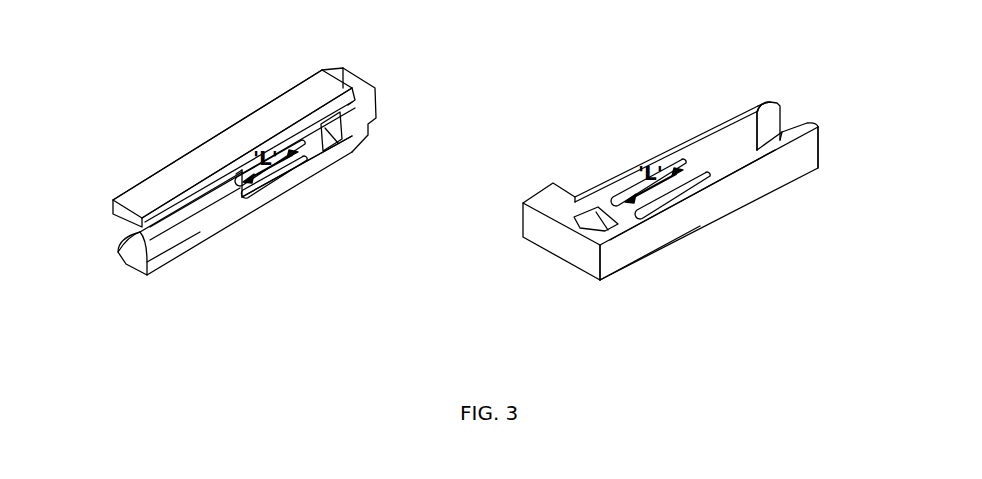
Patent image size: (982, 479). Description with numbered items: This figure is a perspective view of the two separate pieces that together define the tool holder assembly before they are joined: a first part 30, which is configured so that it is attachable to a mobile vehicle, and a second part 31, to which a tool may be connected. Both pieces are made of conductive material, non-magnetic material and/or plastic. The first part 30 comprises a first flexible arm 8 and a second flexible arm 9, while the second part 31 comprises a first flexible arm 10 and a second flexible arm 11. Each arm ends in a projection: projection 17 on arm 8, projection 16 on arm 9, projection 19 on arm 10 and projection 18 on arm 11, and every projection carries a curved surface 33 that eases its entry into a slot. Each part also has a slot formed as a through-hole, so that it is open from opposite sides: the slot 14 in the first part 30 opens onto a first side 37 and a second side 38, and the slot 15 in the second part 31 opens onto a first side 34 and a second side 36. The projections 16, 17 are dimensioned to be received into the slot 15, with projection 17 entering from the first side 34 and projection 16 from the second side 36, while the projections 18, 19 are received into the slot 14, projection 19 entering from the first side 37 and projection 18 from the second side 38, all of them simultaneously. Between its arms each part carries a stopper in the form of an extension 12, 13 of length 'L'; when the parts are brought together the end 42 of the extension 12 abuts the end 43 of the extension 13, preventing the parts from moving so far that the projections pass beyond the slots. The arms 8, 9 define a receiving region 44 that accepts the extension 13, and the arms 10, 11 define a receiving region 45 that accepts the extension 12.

The first flexible arm 8 is at (162, 185).
The first part 30 is at (281, 95).
The first side 37 is at (222, 133).
The projection 17 is at (130, 213).
The curved surface 33 is at (135, 240).
The projection 16 is at (138, 252).
The second flexible arm 9 is at (180, 226).
The receiving region 44 is at (192, 212).
The end 42 is at (233, 182).
The extension 12 is at (262, 178).
The second side 38 is at (313, 155).
The slot 14 is at (327, 122).
The first flexible arm 10 is at (723, 123).
The projection 19 is at (770, 108).
The projection 18 is at (793, 137).
The second flexible arm 11 is at (783, 163).
The receiving region 45 is at (735, 155).
The end 43 is at (697, 173).
The extension 13 is at (667, 188).
The first side 34 is at (580, 230).
The slot 15 is at (593, 223).
The second part 31 is at (620, 273).
The second side 36 is at (647, 257).